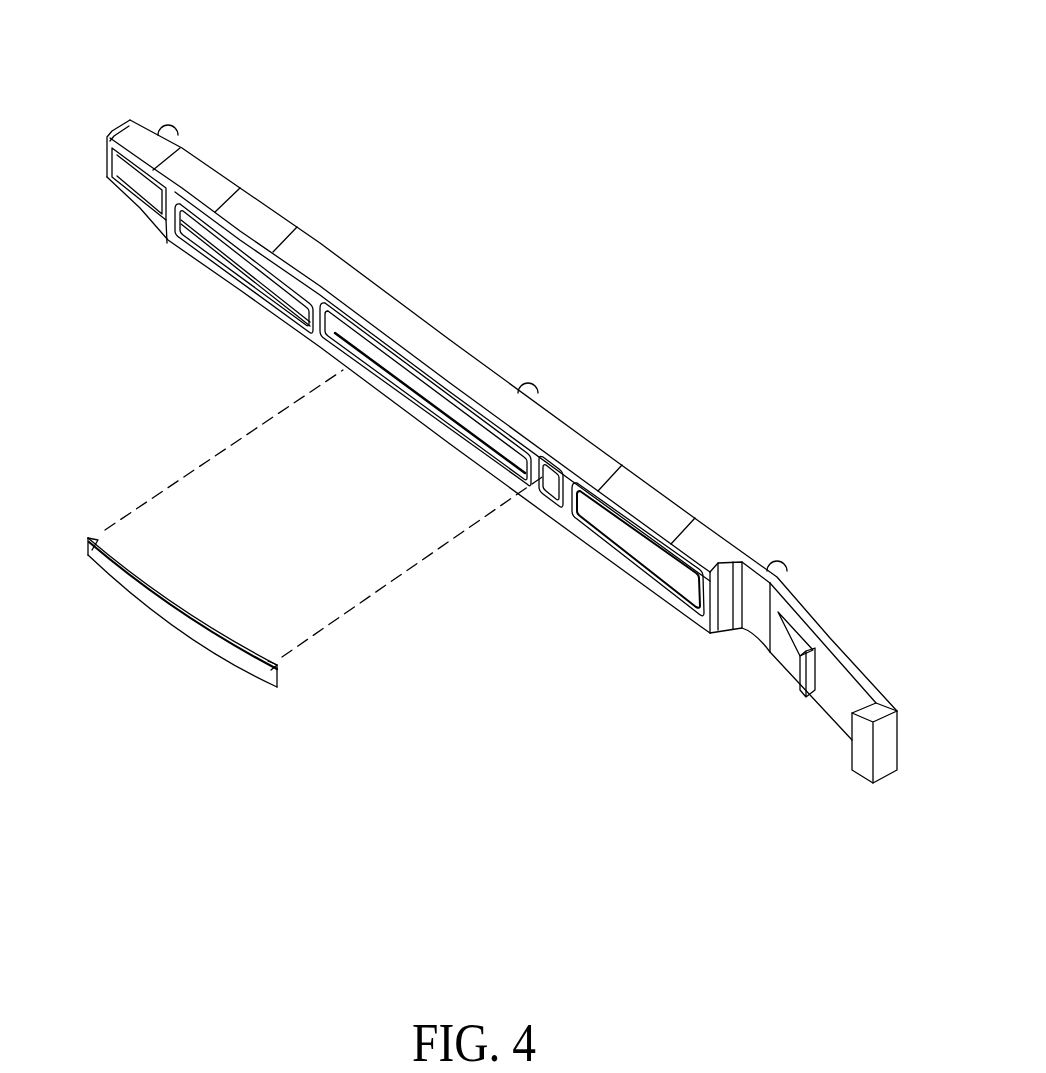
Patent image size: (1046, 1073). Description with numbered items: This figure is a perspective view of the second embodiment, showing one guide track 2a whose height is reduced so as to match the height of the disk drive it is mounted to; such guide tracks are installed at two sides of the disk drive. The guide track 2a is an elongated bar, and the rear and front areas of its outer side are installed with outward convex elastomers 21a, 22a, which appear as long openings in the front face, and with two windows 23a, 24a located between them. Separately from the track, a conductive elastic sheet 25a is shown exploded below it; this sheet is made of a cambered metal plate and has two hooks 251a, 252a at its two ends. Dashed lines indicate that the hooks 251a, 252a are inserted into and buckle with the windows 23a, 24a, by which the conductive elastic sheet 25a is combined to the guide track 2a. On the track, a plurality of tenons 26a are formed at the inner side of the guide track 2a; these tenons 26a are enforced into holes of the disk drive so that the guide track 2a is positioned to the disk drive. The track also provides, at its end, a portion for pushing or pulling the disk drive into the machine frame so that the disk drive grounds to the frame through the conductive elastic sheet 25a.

The guide track 2a is at (482, 355).
The outward convex elastomer 21a is at (228, 258).
The outward convex elastomer 22a is at (640, 535).
The window 23a is at (346, 370).
The window 24a is at (553, 473).
The conductive elastic sheet 25a is at (187, 640).
The hook 251a is at (103, 538).
The hook 252a is at (268, 653).
The tenon 26a is at (170, 120).